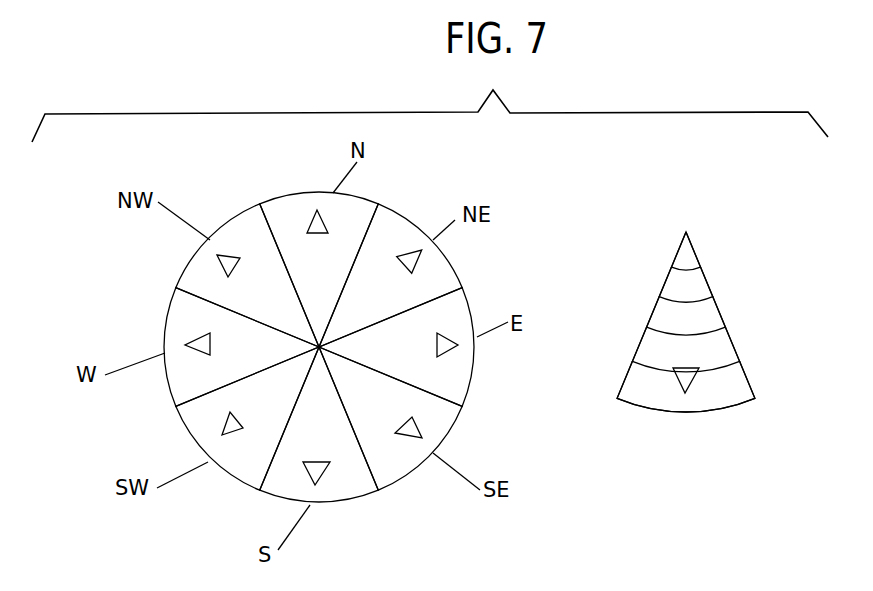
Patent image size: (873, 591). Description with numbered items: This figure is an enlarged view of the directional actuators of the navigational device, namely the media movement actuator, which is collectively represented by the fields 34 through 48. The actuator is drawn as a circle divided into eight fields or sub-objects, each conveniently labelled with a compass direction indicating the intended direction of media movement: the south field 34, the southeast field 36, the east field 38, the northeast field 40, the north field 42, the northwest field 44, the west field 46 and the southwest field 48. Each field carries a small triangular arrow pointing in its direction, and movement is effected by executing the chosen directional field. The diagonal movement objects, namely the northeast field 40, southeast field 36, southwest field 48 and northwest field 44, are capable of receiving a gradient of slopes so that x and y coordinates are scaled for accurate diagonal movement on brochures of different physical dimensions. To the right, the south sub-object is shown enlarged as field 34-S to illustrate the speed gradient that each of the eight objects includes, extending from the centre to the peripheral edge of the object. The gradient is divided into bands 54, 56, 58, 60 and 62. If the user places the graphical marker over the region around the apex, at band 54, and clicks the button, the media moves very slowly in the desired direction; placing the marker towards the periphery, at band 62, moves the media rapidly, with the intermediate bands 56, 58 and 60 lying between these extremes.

The directional field 34 is at (332, 420).
The directional field 36 is at (377, 399).
The directional field 38 is at (392, 354).
The directional field 40 is at (378, 310).
The directional field 42 is at (330, 283).
The directional field 44 is at (283, 312).
The directional field 46 is at (265, 356).
The directional field 48 is at (277, 400).
The south directional field with speed gradient 34-S is at (673, 412).
The apex region of speed gradient 54 is at (695, 257).
The speed gradient region 56 is at (700, 288).
The speed gradient region 58 is at (715, 320).
The speed gradient region 60 is at (725, 355).
The peripheral region of speed gradient 62 is at (738, 390).